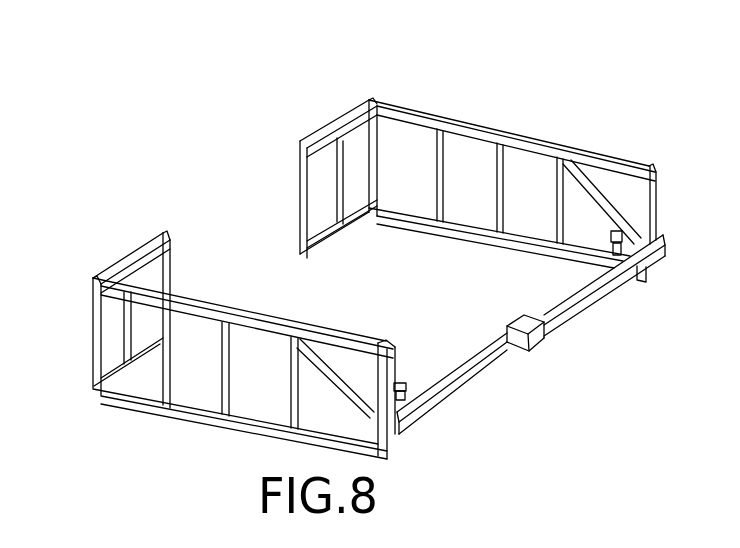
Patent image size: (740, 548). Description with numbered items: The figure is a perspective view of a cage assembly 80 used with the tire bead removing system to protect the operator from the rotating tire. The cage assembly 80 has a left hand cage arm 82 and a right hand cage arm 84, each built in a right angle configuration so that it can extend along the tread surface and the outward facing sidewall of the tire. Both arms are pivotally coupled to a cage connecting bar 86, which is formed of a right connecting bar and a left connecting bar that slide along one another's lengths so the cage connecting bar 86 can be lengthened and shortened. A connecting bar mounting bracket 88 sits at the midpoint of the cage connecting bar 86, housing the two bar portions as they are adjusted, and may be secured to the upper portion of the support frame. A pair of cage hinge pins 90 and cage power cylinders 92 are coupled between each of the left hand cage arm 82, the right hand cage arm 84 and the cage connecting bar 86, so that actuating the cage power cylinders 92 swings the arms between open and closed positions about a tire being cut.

The cage assembly 80 is at (624, 79).
The left hand cage arm 82 is at (373, 99).
The right hand cage arm 84 is at (92, 325).
The cage connecting bar 86 is at (492, 362).
The connecting bar mounting bracket 88 is at (546, 333).
The cage hinge pins 90 is at (658, 232).
The cage power cylinders 92 is at (611, 243).